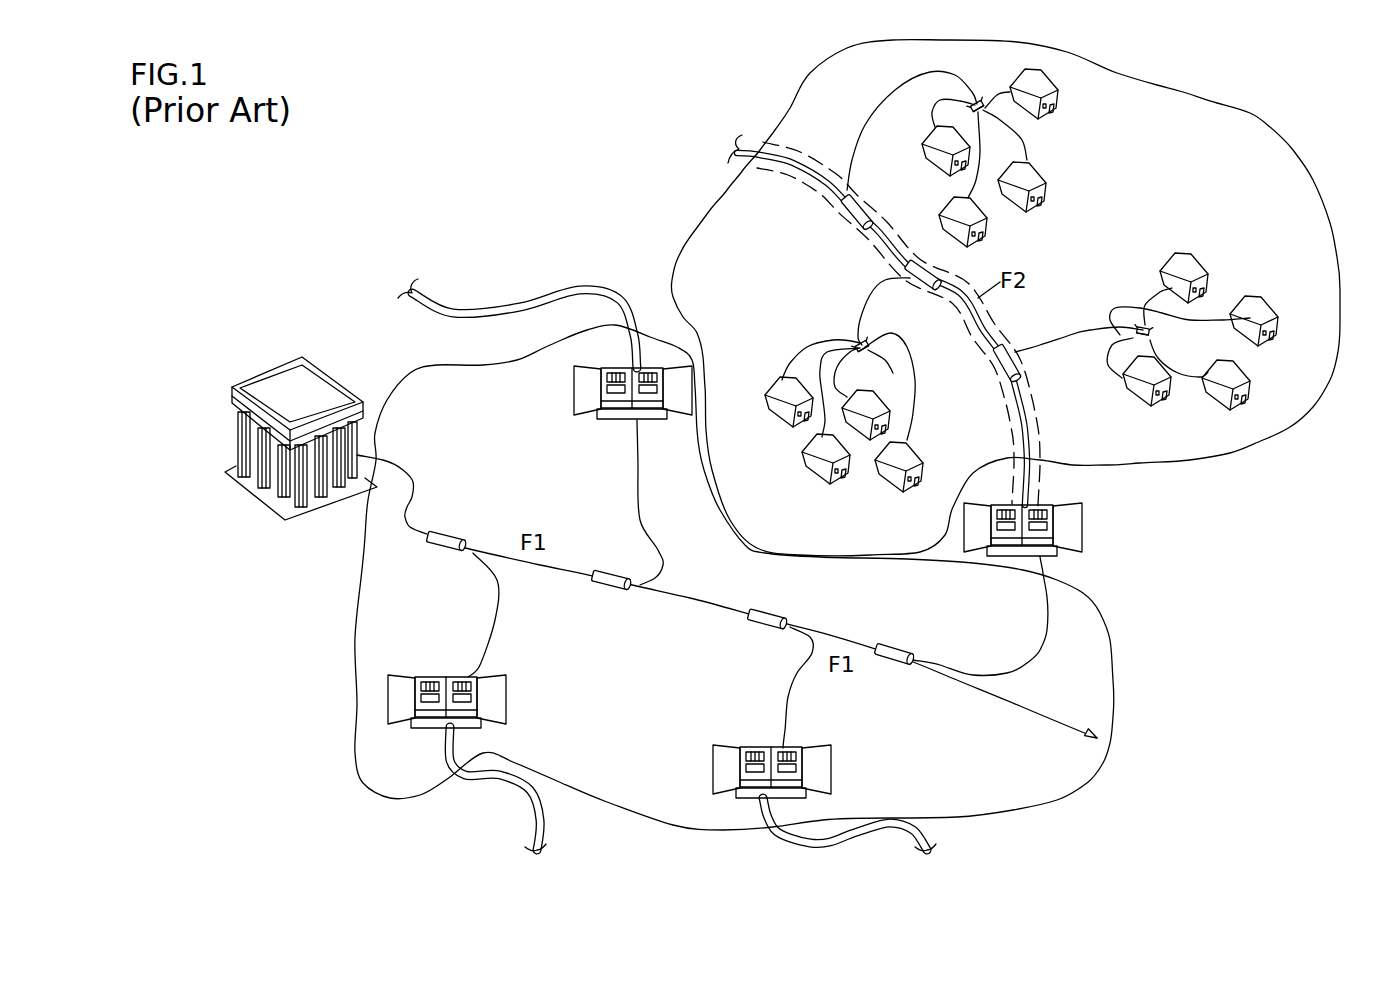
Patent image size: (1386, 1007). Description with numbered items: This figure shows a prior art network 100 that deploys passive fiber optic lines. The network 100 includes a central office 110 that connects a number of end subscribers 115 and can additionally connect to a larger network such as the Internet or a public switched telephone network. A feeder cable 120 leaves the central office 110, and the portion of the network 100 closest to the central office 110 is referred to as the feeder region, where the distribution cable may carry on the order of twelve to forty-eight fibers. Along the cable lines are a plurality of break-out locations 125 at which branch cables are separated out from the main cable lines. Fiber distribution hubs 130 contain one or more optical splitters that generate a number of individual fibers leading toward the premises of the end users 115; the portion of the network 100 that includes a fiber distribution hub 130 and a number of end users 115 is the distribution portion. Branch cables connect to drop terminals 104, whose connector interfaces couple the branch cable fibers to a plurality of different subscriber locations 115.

The network 100 is at (455, 198).
The drop terminal 104 is at (977, 102).
The central office 110 is at (240, 432).
The end subscriber 115 is at (1032, 177).
The feeder cable 120 is at (417, 481).
The break-out location 125 is at (447, 532).
The fiber distribution hub 130 is at (682, 413).